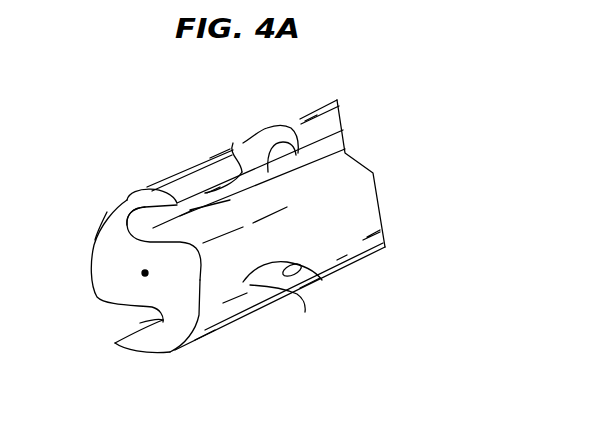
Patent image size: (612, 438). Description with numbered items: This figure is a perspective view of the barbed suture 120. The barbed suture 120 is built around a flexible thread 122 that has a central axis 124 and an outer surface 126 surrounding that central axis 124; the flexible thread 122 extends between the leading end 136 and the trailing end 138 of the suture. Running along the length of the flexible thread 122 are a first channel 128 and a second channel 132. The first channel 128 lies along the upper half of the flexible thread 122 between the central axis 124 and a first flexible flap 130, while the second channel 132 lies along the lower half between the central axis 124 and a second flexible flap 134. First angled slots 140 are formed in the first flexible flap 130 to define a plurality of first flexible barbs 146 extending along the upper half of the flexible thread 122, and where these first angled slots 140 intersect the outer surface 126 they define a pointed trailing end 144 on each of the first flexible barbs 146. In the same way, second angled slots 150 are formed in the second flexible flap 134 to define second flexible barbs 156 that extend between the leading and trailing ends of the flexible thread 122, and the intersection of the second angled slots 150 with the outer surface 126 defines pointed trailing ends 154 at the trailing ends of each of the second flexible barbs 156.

The barbed suture 120 is at (119, 91).
The flexible thread 122 is at (90, 281).
The central axis 124 is at (142, 272).
The outer surface 126 is at (203, 342).
The first channel 128 is at (143, 221).
The first flexible flap 130 is at (146, 195).
The second channel 132 is at (140, 323).
The second flexible flap 134 is at (153, 351).
The leading end 136 is at (107, 212).
The trailing end 138 is at (394, 122).
The first angled slots 140 is at (265, 128).
The pointed trailing end 144 is at (234, 147).
The first flexible barbs 146 is at (190, 167).
The second angled slots 150 is at (305, 280).
The pointed trailing ends 154 is at (290, 288).
The second flexible barbs 156 is at (340, 244).